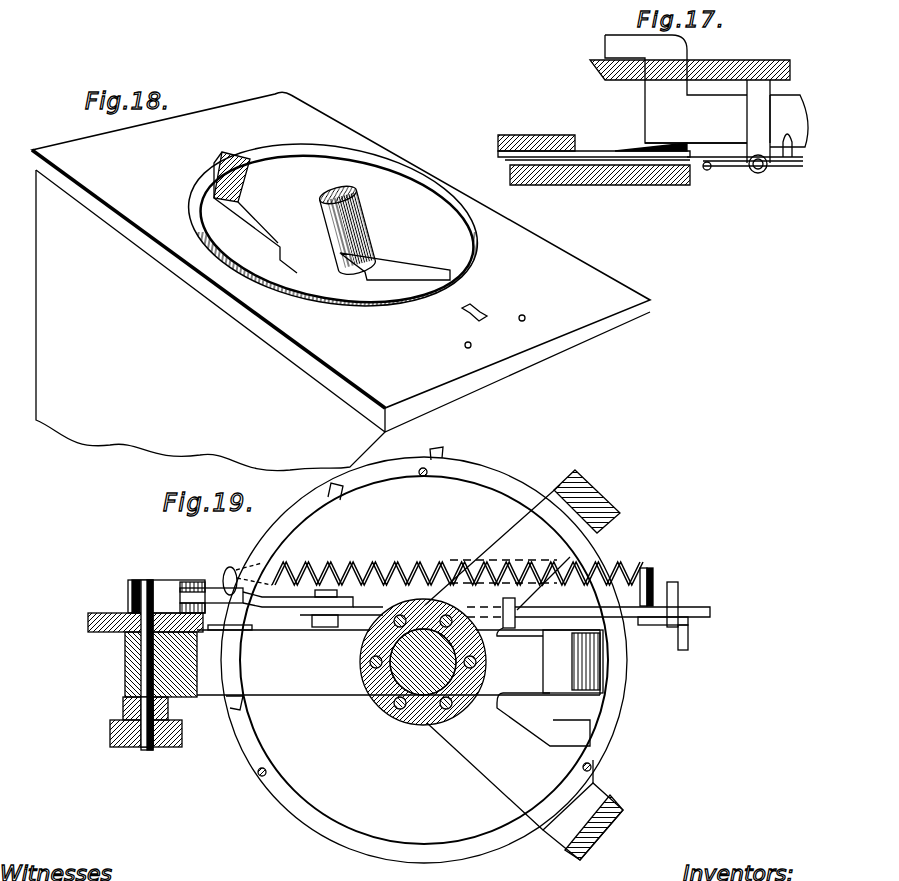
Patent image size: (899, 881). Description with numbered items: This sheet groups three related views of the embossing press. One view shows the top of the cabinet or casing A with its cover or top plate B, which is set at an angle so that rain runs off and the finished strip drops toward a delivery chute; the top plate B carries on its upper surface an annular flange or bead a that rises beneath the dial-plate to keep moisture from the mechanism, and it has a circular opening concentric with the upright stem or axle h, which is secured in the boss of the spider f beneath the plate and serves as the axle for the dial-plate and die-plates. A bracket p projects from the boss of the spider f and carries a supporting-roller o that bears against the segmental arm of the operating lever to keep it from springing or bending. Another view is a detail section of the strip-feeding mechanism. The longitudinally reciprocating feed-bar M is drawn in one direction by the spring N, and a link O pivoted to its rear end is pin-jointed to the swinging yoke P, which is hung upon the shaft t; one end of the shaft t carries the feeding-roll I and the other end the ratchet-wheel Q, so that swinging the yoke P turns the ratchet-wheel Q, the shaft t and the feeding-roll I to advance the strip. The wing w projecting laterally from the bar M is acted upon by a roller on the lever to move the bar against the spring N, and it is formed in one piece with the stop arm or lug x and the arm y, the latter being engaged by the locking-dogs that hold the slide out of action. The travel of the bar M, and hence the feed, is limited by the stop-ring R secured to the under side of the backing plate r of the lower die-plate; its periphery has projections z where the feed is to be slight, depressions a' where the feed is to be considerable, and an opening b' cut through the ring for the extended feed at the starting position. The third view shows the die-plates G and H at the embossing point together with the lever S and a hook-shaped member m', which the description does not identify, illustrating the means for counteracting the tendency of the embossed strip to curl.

In FIG. 17, the hook plate m' is at (673, 77).
In FIG. 17, the top plate B is at (727, 60).
In FIG. 18, the top plate B is at (178, 129).
In FIG. 17, the lever S is at (707, 119).
In FIG. 17, the die-plate G is at (597, 151).
In FIG. 17, the die-plate H is at (600, 160).
In FIG. 18, the annular flange or bead a is at (333, 221).
In FIG. 18, the supporting-frame or spider f is at (268, 223).
In FIG. 19, the supporting-frame or spider f is at (467, 736).
In FIG. 18, the stem or axle h is at (353, 227).
In FIG. 19, the stem or axle h is at (427, 713).
In FIG. 18, the bracket p is at (367, 280).
In FIG. 19, the bracket p is at (523, 668).
In FIG. 18, the cabinet or casing A is at (210, 320).
In FIG. 19, the swinging yoke P is at (162, 587).
In FIG. 19, the ratchet-wheel Q is at (107, 633).
In FIG. 19, the shaft t is at (145, 668).
In FIG. 19, the feeding-roll I is at (165, 735).
In FIG. 19, the depressions a' is at (283, 618).
In FIG. 19, the projections z is at (438, 460).
In FIG. 19, the spring N is at (392, 562).
In FIG. 19, the opening b' is at (634, 570).
In FIG. 19, the feed-bar M is at (699, 607).
In FIG. 19, the arm y is at (679, 583).
In FIG. 19, the stop arm or lug x is at (652, 626).
In FIG. 19, the wing or plate w is at (689, 640).
In FIG. 19, the stop-ring R is at (620, 703).
In FIG. 19, the link O is at (544, 681).
In FIG. 19, the supporting-roller o is at (287, 603).
In FIG. 19, the backing plate r is at (384, 704).